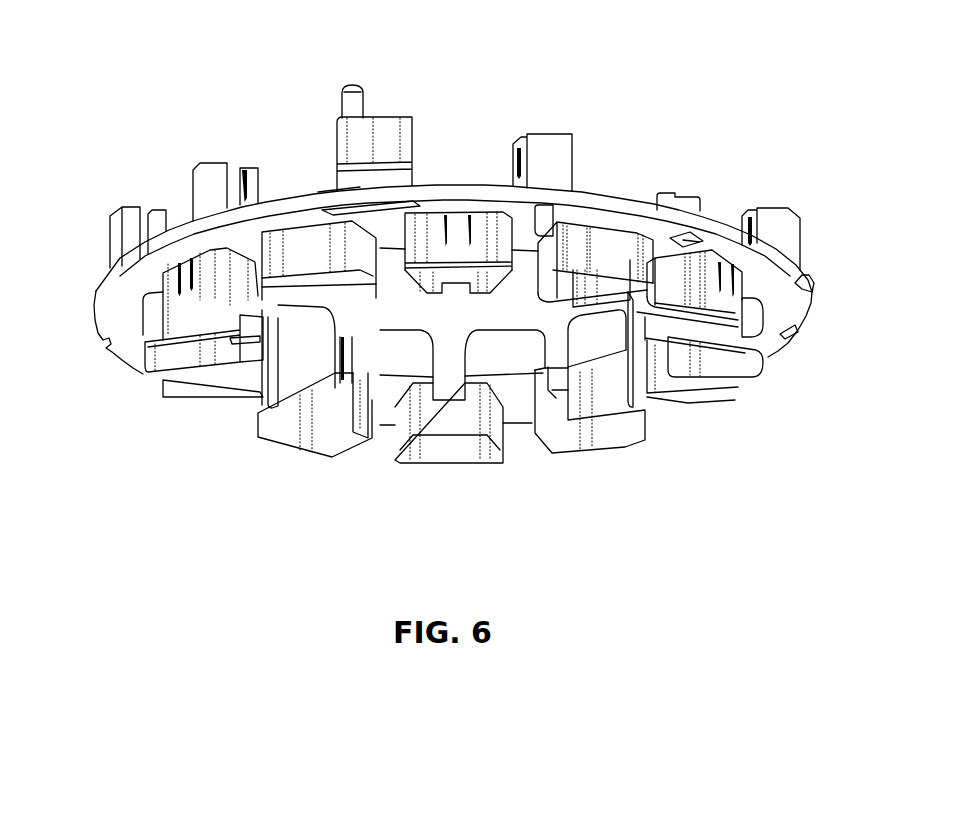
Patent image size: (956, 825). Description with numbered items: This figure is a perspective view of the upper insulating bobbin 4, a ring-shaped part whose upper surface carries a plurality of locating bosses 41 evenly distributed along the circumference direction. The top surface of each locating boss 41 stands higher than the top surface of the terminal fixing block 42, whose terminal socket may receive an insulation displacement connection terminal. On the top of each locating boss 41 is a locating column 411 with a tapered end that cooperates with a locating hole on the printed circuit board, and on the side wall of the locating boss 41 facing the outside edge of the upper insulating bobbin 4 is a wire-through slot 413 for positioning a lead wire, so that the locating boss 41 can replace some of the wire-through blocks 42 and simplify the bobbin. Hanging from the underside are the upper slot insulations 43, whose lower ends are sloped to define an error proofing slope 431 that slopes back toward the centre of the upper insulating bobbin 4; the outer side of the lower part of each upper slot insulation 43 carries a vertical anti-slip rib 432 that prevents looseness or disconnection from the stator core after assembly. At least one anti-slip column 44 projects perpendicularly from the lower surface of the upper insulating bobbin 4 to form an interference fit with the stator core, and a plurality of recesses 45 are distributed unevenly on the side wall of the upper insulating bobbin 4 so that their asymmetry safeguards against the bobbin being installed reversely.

The upper insulating bobbin 4 is at (130, 262).
The locating boss 41 is at (390, 128).
The locating column 411 is at (348, 90).
The wire-through slot 413 is at (345, 182).
The terminal fixing block 42 is at (557, 152).
The upper slot insulation 43 is at (285, 257).
The error proofing slope 431 is at (420, 272).
The anti-slip rib 432 is at (467, 225).
The anti-slip column 44 is at (542, 212).
The recess 45 is at (800, 277).